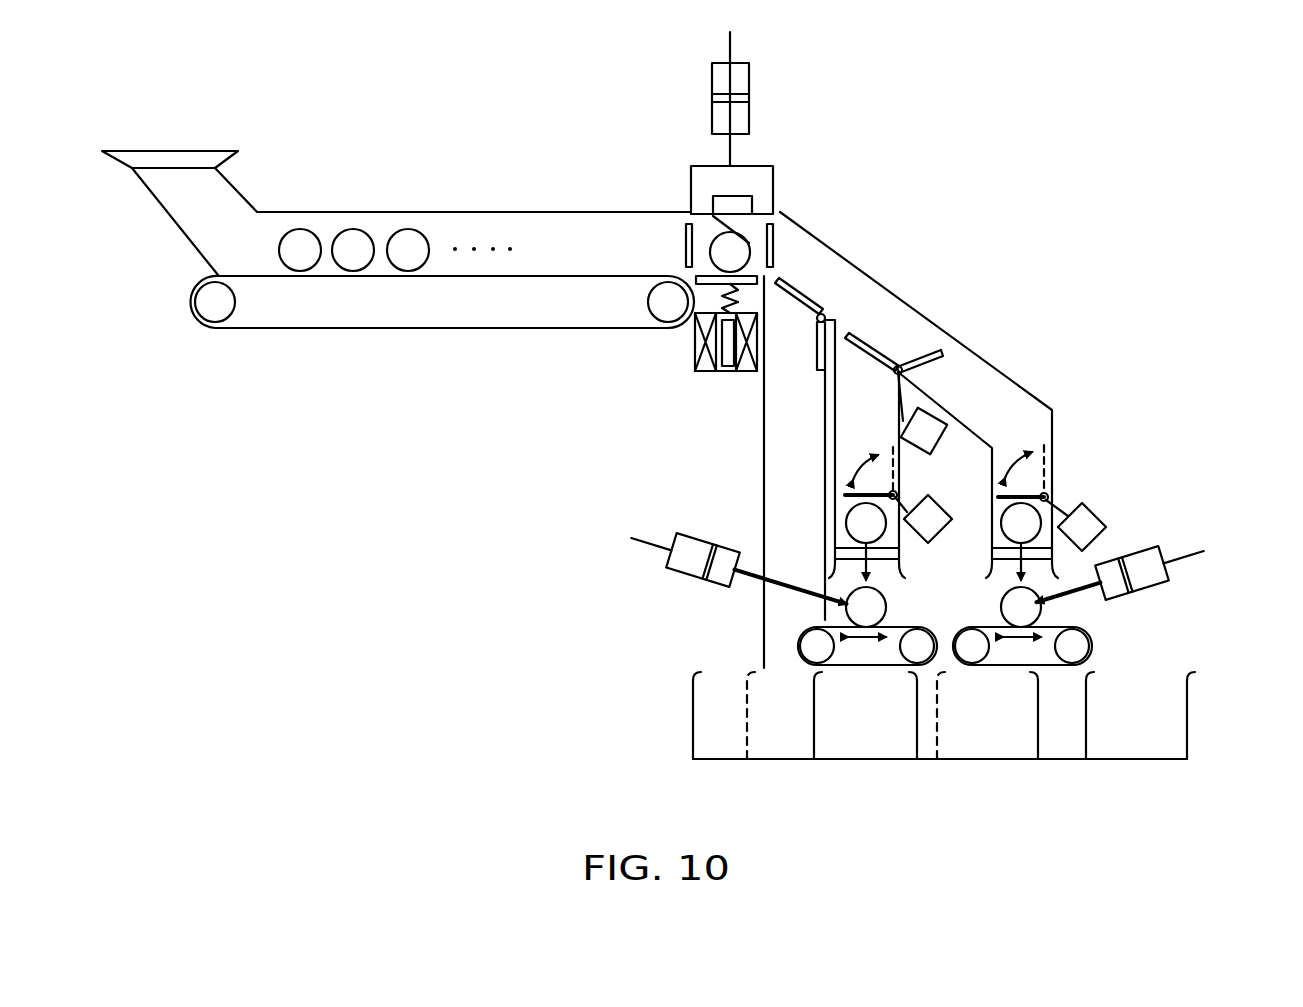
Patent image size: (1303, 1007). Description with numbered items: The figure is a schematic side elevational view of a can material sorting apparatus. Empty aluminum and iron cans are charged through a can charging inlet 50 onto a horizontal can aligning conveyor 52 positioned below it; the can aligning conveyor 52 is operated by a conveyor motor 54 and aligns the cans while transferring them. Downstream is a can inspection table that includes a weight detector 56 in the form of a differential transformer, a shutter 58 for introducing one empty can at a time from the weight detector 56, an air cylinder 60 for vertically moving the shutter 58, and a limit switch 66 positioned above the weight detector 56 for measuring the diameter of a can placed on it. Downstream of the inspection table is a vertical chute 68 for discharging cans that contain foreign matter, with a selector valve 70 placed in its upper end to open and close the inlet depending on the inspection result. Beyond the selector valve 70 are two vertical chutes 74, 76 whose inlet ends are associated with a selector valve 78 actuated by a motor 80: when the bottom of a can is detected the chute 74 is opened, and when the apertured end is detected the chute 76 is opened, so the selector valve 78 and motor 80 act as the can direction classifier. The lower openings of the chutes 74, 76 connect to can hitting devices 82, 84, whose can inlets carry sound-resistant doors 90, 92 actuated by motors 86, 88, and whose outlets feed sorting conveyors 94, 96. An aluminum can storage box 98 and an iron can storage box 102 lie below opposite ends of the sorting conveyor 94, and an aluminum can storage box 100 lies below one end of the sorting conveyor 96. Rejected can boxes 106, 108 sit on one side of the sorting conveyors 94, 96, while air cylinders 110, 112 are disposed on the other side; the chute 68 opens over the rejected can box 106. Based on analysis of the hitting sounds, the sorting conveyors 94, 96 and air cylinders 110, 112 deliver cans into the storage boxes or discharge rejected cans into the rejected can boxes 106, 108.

The can charging inlet 50 is at (197, 152).
The can aligning conveyor 52 is at (531, 276).
The conveyor motor 54 is at (233, 318).
The weight detector 56 is at (693, 347).
The shutter 58 is at (683, 246).
The air cylinder 60 is at (750, 73).
The limit switch 66 is at (737, 194).
The vertical chute 68 is at (762, 417).
The selector valve 70 is at (803, 296).
The vertical chute 74 is at (836, 445).
The vertical chute 76 is at (1053, 423).
The selector valve 78 is at (917, 350).
The motor 80 is at (957, 417).
The can hitting device 82 is at (838, 497).
The can hitting device 84 is at (1043, 541).
The motor 86 is at (921, 543).
The motor 88 is at (1095, 514).
The sound-resistant door 90 is at (875, 494).
The sound-resistant door 92 is at (1030, 492).
The sorting conveyor 94 is at (798, 645).
The sorting conveyor 96 is at (1092, 650).
The aluminum can storage box 98 is at (1038, 728).
The aluminum can storage box 100 is at (1195, 700).
The iron can storage box 102 is at (703, 718).
The rejected can box 106 is at (860, 747).
The rejected can box 108 is at (1087, 728).
The air cylinder 110 is at (680, 573).
The air cylinder 112 is at (1153, 593).